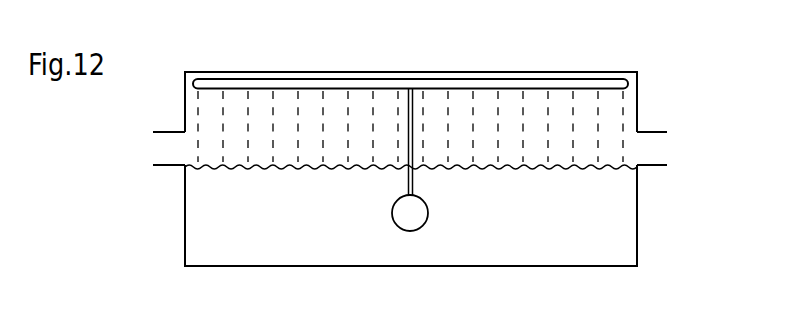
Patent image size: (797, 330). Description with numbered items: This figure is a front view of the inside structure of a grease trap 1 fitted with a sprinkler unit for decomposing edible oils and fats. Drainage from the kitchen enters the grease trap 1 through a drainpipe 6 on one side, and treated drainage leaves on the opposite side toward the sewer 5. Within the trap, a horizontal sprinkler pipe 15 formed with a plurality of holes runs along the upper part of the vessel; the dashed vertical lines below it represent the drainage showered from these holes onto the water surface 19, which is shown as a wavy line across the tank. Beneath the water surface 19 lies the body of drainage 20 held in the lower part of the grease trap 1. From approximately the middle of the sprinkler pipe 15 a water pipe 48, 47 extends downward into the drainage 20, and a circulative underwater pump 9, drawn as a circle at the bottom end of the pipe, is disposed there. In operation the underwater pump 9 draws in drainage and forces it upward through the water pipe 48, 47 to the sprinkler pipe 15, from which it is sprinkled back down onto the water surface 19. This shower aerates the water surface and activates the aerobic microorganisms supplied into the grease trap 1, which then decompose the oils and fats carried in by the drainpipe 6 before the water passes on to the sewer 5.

The grease trap 1 is at (656, 76).
The sewer 5 is at (650, 141).
The drainpipe 6 is at (170, 151).
The sprinkler pipe 15 is at (358, 87).
The water surface 19 is at (567, 169).
The drainage 20 is at (628, 251).
The water pipe 48 is at (584, 162).
The water pipe 47 is at (415, 183).
The circulative underwater pump 9 is at (420, 220).